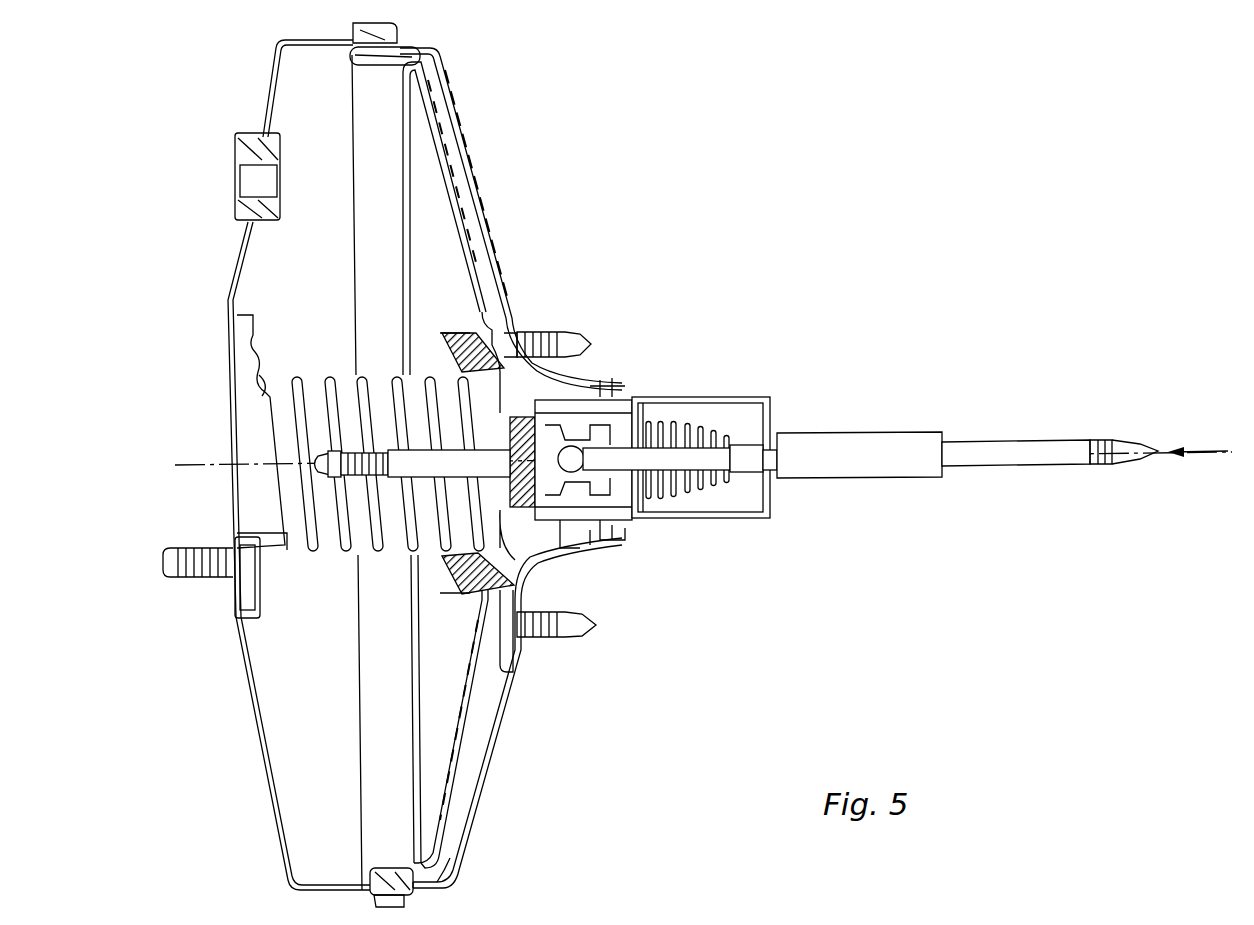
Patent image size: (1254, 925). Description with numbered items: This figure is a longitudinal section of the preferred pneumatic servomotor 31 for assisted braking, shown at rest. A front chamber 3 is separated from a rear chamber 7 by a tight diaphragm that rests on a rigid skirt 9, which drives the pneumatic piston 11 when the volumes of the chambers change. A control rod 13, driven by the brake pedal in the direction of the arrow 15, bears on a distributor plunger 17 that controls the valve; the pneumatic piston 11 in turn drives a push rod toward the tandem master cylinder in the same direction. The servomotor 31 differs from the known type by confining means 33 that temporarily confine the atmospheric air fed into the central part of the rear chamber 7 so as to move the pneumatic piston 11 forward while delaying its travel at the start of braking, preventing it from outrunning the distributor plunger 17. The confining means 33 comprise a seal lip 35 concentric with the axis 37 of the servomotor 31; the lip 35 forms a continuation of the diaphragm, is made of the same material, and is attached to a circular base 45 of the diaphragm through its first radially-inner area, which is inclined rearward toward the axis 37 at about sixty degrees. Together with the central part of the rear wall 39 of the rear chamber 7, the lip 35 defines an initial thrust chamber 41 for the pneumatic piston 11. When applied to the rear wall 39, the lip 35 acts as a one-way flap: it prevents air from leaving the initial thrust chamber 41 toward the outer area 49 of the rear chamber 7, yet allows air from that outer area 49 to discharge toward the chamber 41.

The pneumatic servomotor 31 is at (185, 95).
The front chamber 3 is at (296, 292).
The rear chamber 7 is at (463, 170).
The rear wall 39 is at (490, 223).
The rigid skirt 9 is at (463, 238).
The pneumatic piston 11 is at (447, 353).
The initial thrust chamber 41 is at (493, 318).
The base of the diaphragm 45 is at (447, 590).
The control rod 13 is at (988, 440).
The arrow 15 is at (1195, 450).
The axis 37 is at (183, 465).
The lip 35 is at (523, 560).
The distributor plunger 17 is at (623, 543).
The confining means 33 is at (512, 582).
The outer area 49 is at (450, 856).